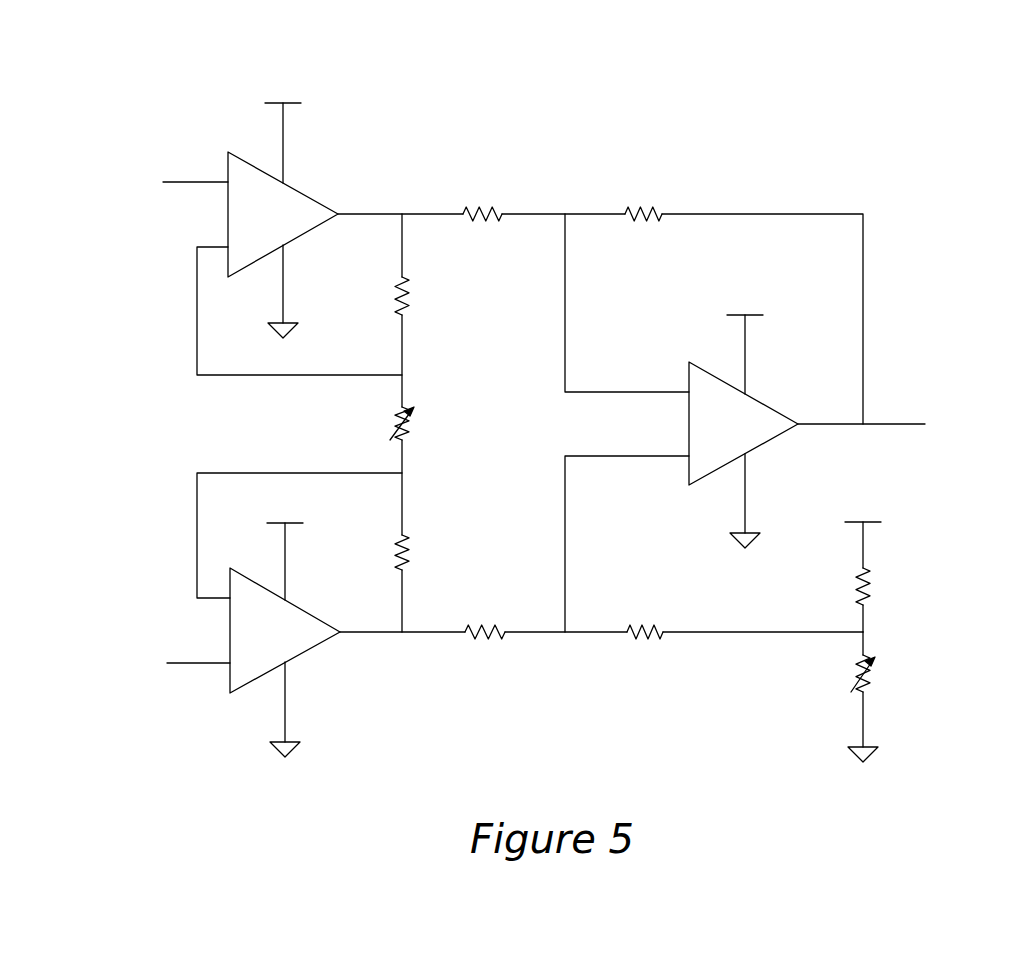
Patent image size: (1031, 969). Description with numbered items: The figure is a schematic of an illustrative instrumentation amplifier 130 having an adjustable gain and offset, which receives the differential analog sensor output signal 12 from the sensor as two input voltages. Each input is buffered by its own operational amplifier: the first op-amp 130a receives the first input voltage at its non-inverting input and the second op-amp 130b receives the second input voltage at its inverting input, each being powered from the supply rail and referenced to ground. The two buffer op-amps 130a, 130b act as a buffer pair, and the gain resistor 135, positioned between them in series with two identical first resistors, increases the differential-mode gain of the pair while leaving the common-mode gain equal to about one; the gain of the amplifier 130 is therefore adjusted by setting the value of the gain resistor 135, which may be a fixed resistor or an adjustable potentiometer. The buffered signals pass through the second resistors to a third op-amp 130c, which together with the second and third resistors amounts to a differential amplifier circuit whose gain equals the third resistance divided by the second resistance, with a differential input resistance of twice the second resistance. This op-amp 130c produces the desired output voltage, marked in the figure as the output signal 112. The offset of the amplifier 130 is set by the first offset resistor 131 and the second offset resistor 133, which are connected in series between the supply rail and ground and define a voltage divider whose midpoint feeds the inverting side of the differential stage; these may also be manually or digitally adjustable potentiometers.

The analog sensor output signal 12 is at (193, 180).
The amplifier 130 is at (798, 155).
The operational amplifier 130a is at (310, 196).
The operational amplifier 130b is at (312, 612).
The op-amp 130c is at (772, 408).
The resistor Rgain 135 is at (404, 436).
The analog sensor output signal 112 is at (895, 423).
The resistor Roffset1 131 is at (857, 589).
The resistor Roffset2 133 is at (857, 677).